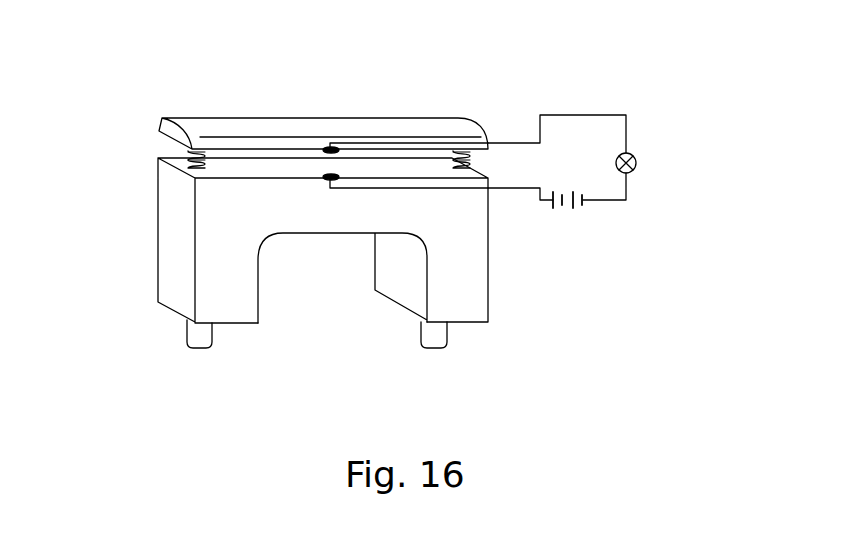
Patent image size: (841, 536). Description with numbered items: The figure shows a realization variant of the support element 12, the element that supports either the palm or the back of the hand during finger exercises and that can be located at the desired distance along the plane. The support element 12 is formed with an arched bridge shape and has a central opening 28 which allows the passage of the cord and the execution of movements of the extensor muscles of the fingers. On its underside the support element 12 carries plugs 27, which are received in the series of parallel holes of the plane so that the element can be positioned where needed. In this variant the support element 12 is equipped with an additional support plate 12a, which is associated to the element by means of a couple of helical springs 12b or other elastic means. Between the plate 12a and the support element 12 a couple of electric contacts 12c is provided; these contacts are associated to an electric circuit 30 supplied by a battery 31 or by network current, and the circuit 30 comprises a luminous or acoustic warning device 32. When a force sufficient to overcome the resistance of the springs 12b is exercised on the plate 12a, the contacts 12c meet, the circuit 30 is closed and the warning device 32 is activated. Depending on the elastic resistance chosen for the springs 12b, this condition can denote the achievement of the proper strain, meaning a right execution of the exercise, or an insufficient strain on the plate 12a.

The support element 12 is at (222, 247).
The additional support plate 12a is at (226, 127).
The helical springs 12b is at (192, 155).
The electric contacts 12c is at (330, 152).
The plugs 27 is at (193, 345).
The central opening 28 is at (393, 270).
The electric circuit 30 is at (630, 218).
The battery 31 is at (570, 207).
The warning device 32 is at (635, 162).